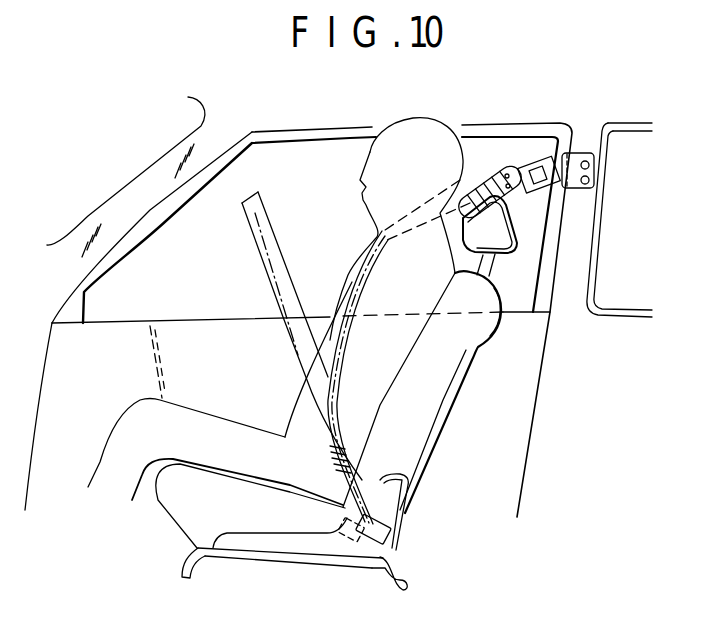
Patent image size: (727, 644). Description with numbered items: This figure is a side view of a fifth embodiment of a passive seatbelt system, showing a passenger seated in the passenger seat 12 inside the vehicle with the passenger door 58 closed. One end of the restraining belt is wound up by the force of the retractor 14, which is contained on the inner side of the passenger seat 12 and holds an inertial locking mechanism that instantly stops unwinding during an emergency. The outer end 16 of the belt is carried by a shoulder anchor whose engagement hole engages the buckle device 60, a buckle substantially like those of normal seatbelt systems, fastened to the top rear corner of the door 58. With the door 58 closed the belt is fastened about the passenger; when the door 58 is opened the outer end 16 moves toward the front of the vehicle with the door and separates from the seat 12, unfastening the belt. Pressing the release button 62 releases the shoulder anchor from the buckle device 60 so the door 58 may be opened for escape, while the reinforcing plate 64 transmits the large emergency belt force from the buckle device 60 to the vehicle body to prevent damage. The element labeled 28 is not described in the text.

The passenger seat 12 is at (470, 360).
The retractor 14 is at (342, 558).
The outer end of the belt 16 is at (262, 212).
The instrument panel 28 is at (230, 431).
The passenger door 58 is at (224, 323).
The buckle device 60 is at (524, 163).
The release button 62 is at (536, 165).
The reinforcing plate 64 is at (578, 157).